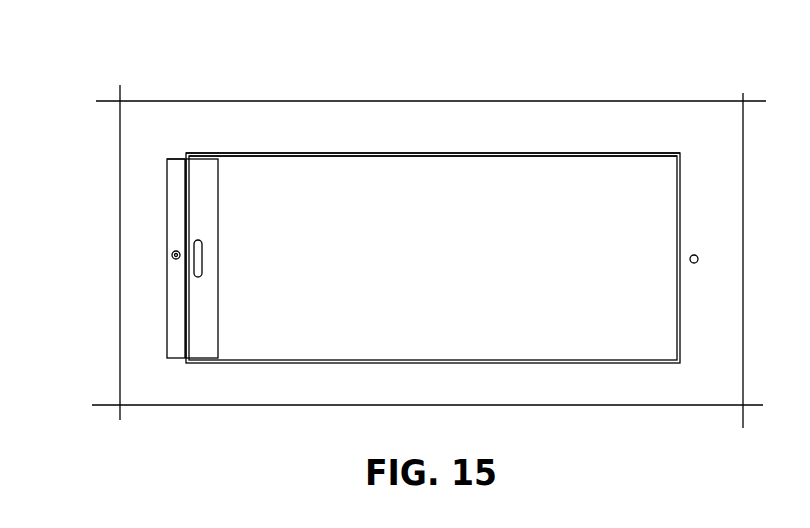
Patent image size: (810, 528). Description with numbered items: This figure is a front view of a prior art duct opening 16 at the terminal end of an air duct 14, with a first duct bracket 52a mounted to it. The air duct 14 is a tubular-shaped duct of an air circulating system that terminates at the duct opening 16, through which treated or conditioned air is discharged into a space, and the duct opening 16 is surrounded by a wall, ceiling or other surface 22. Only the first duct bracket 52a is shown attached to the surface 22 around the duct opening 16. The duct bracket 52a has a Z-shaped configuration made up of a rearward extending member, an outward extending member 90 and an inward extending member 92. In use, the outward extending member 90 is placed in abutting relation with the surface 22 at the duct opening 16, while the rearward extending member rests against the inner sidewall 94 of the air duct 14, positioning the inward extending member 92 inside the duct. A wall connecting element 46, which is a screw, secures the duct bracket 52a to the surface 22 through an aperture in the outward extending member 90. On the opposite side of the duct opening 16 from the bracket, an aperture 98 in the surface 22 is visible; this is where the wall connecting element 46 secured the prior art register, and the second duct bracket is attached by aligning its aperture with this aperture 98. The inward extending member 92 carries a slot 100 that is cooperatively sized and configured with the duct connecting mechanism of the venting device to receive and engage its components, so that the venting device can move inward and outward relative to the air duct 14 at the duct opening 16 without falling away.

The air duct 14 is at (610, 153).
The duct opening 16 is at (465, 149).
The surface 22 is at (137, 175).
The wall connecting element 46 is at (172, 255).
The first duct bracket 52a is at (170, 152).
The outward extending member 90 is at (174, 327).
The inward extending member 92 is at (198, 342).
The inner sidewall 94 is at (351, 161).
The aperture 98 is at (699, 259).
The slot 100 is at (194, 279).